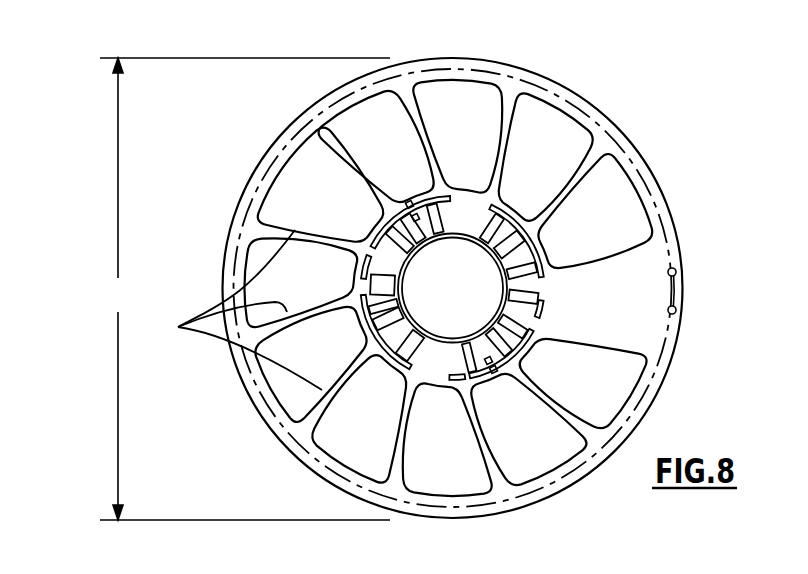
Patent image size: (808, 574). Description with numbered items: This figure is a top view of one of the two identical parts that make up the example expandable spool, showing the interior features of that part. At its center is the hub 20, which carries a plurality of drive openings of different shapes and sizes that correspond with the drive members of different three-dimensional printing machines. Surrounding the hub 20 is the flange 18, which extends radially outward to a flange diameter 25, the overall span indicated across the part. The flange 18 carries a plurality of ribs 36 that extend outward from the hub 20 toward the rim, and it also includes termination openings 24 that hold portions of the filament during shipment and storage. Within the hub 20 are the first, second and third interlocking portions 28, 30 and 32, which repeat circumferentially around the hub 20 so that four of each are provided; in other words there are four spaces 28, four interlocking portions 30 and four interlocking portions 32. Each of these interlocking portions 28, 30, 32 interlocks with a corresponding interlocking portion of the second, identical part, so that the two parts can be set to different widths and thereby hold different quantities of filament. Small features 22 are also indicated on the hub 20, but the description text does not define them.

The flange 18 is at (665, 217).
The hub 20 is at (543, 252).
The locating tab 22 is at (409, 199).
The termination openings 24 is at (676, 309).
The flange diameter 25 is at (245, 289).
The first interlocking portion 28 is at (397, 410).
The second interlocking portion 30 is at (472, 420).
The third interlocking portion 32 is at (527, 362).
The ribs 36 is at (232, 310).